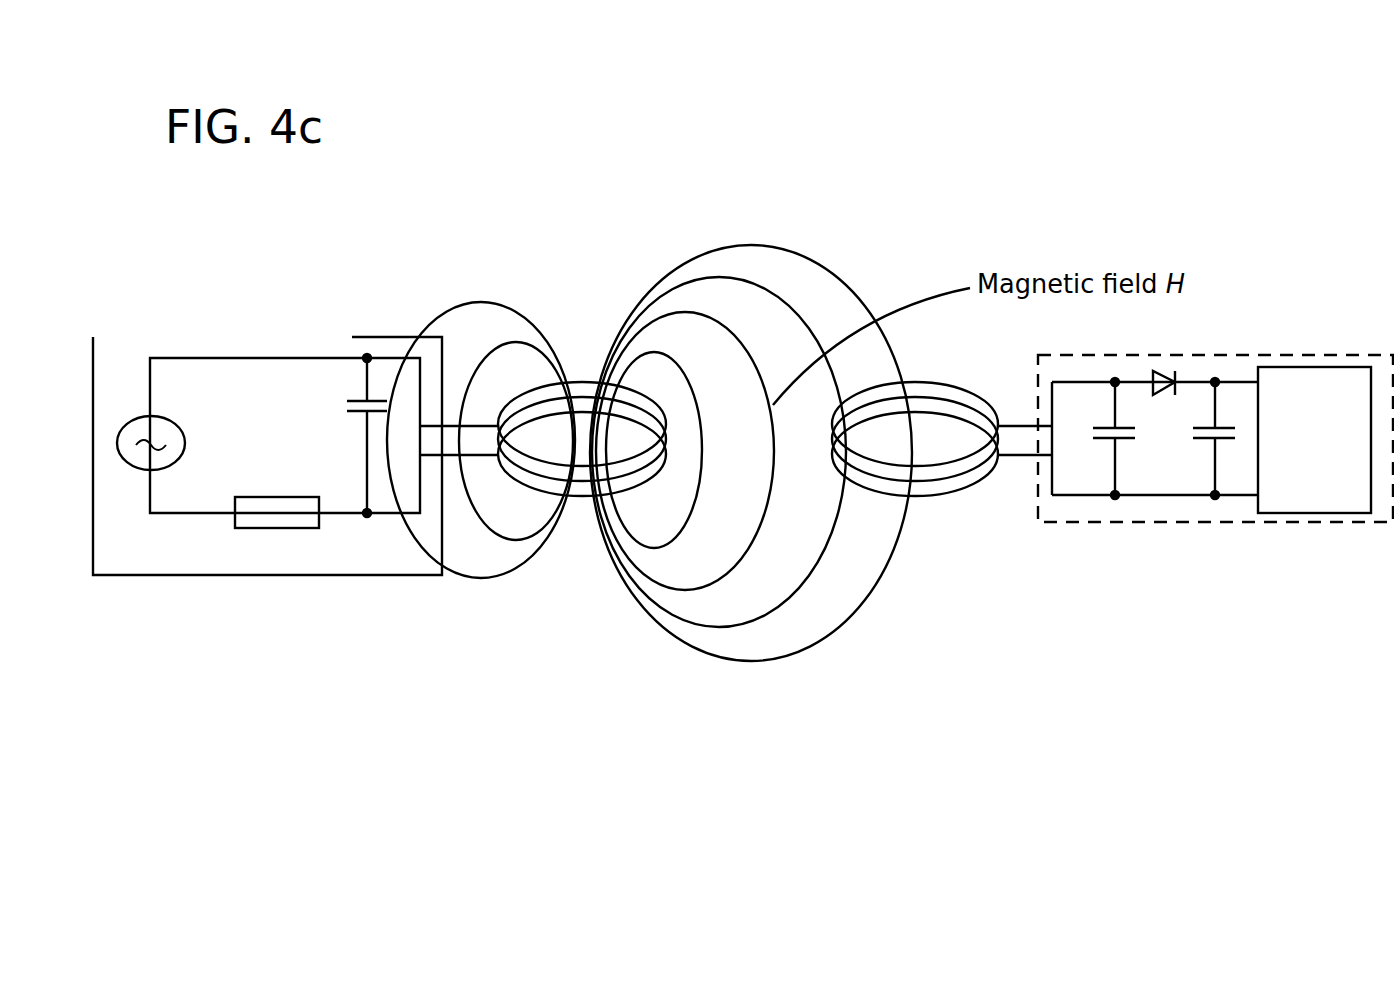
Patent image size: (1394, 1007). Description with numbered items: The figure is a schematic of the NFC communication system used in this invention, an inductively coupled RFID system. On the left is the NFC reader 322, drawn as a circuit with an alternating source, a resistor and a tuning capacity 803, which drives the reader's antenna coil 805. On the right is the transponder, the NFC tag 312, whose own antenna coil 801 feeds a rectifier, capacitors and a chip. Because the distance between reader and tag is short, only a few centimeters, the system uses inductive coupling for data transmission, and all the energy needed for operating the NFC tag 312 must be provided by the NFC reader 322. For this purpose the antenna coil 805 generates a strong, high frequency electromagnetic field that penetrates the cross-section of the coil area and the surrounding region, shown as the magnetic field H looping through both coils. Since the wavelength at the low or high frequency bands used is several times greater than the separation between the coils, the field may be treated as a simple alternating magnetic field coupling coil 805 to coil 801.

The capacity Cr (reader tuning capacitor) 803 is at (351, 402).
The NFC reader 322 is at (295, 537).
The reader antenna coil 805 is at (578, 497).
The tag antenna coil 801 is at (938, 497).
The NFC tag 312 is at (1195, 544).